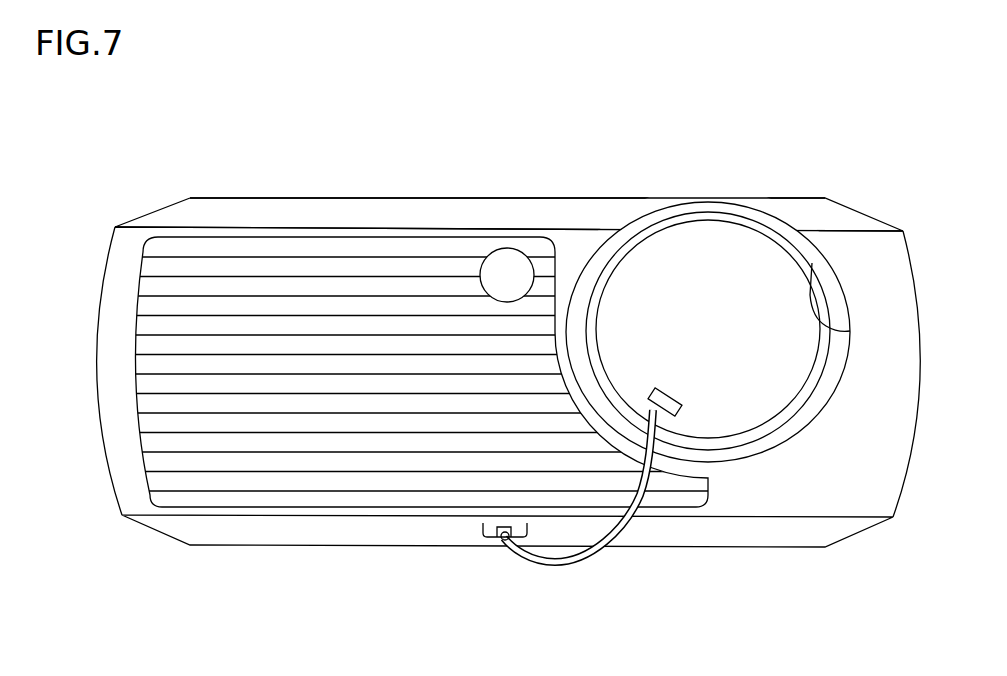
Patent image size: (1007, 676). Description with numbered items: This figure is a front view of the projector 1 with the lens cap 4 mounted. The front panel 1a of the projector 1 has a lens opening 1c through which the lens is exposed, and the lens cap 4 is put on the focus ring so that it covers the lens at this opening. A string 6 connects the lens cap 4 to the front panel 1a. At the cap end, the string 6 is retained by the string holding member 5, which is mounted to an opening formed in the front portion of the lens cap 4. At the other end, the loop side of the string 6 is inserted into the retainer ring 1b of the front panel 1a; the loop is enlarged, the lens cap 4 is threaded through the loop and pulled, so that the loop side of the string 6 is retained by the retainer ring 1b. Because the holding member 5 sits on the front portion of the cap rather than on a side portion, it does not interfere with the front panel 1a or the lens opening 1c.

The projector 1 is at (462, 210).
The front panel 1a is at (874, 260).
The retainer ring 1b is at (494, 543).
The lens opening 1c is at (812, 263).
The lens cap 4 is at (680, 238).
The string holding member 5 is at (680, 399).
The string 6 is at (612, 560).